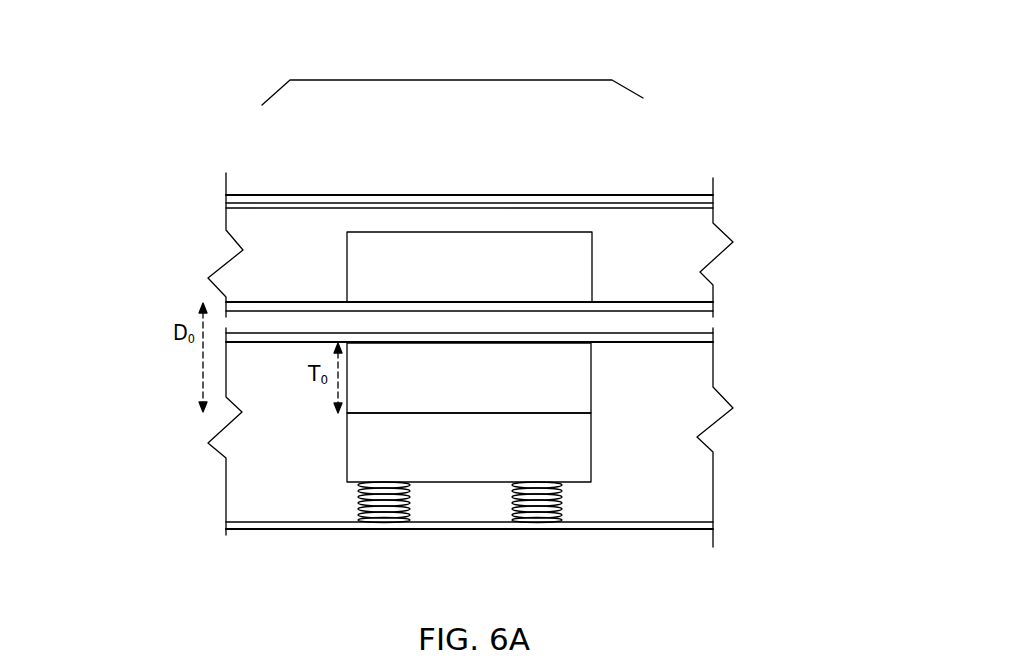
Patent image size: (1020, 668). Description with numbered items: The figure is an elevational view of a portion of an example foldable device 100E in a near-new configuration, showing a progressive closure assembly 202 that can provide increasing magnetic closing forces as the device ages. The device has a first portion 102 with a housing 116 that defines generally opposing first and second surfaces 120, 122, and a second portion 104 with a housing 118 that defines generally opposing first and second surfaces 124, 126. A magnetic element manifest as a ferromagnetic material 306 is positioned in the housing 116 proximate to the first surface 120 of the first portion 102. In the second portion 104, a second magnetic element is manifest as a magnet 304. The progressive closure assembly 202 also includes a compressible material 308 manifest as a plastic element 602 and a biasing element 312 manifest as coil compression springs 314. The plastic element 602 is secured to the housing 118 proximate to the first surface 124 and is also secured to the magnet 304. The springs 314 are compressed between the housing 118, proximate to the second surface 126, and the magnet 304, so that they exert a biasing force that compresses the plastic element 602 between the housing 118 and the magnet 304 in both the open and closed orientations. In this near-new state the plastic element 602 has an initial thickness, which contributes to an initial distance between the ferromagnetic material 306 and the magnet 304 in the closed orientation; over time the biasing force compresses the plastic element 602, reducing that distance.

The device 100E is at (198, 44).
The progressive closure assembly 202 is at (427, 80).
The first portion 102 is at (298, 188).
The housing 116 is at (226, 200).
The second surface 122 is at (693, 194).
The first surface 120 is at (705, 311).
The ferromagnetic material 306 is at (469, 267).
The second portion 104 is at (315, 538).
The first surface 124 is at (553, 333).
The housing 118 is at (685, 530).
The second surface 126 is at (240, 530).
The compressible material 308 is at (599, 355).
The plastic element 602 is at (469, 378).
The magnet 304 is at (469, 447).
The biasing element 312 is at (397, 537).
The coil compression springs 314 is at (377, 522).